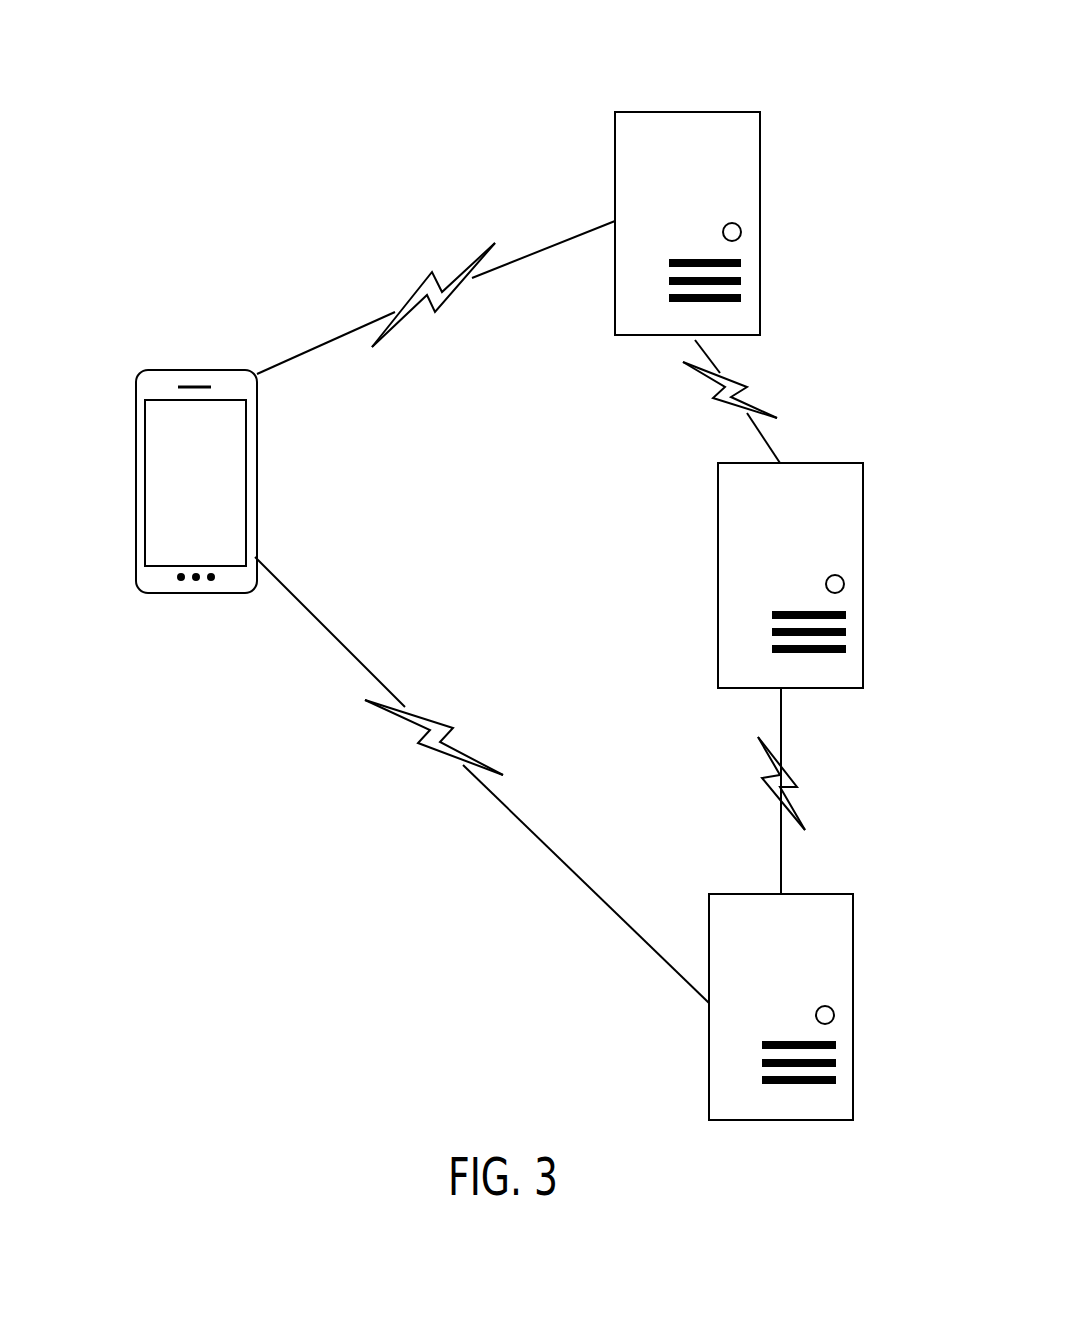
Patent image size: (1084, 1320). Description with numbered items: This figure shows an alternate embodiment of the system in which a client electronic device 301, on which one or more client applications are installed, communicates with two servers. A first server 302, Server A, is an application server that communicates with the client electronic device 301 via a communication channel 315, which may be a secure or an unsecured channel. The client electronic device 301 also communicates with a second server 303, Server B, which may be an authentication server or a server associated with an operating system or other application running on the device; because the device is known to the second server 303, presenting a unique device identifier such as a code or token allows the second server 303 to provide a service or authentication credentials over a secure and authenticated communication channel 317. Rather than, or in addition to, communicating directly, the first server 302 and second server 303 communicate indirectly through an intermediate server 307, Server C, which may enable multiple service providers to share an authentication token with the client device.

The client electronic device 301 is at (177, 368).
The first server 302 is at (705, 112).
The second server 303 is at (828, 894).
The intermediate server 307 is at (827, 463).
The communication channel 315 is at (422, 288).
The secure and authenticated communication channel 317 is at (440, 745).